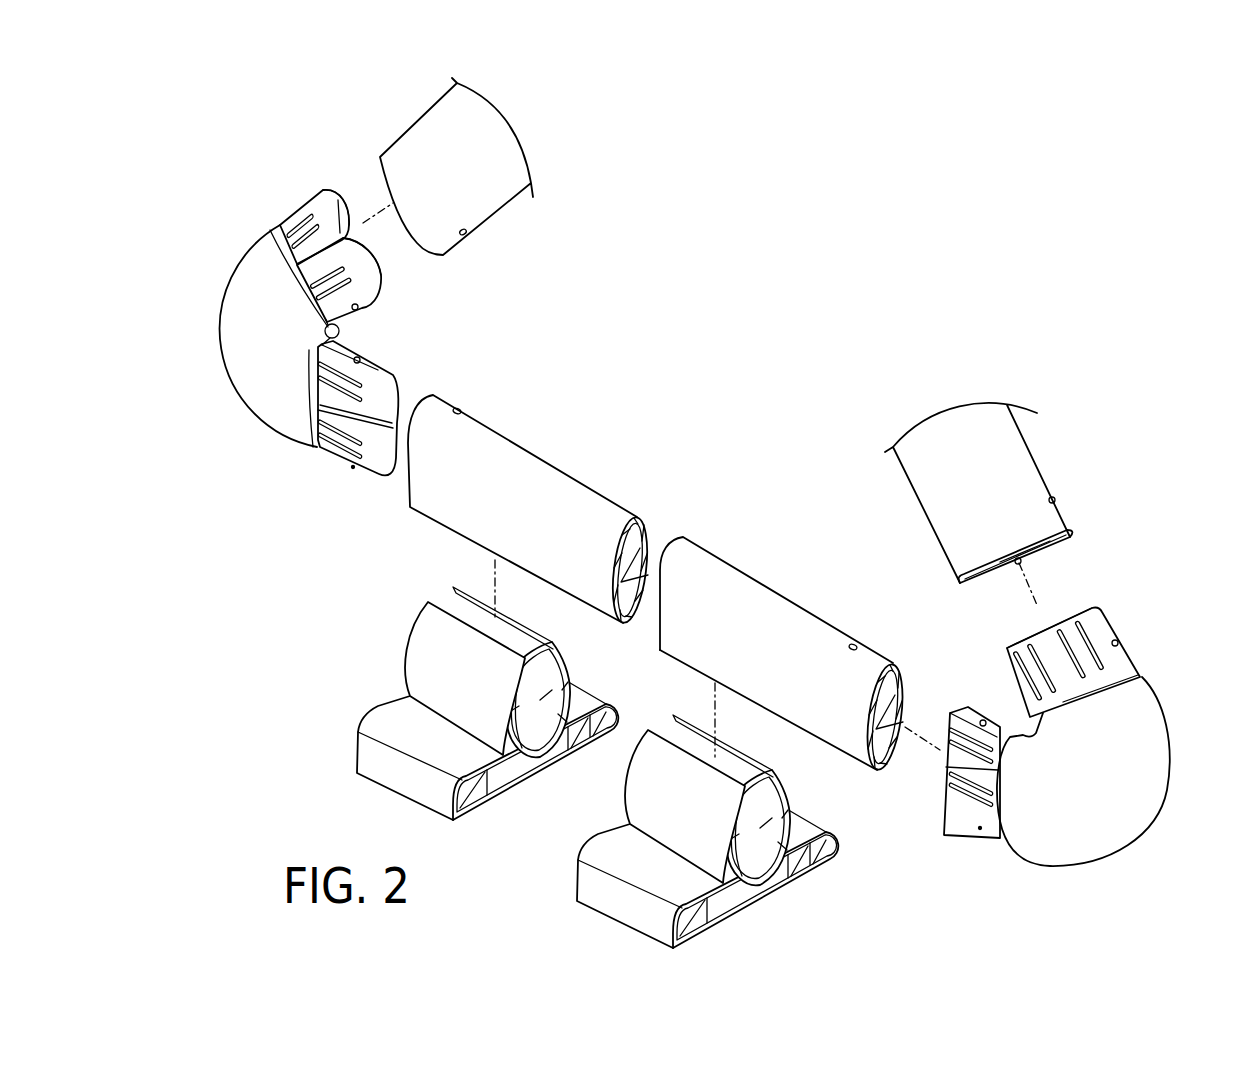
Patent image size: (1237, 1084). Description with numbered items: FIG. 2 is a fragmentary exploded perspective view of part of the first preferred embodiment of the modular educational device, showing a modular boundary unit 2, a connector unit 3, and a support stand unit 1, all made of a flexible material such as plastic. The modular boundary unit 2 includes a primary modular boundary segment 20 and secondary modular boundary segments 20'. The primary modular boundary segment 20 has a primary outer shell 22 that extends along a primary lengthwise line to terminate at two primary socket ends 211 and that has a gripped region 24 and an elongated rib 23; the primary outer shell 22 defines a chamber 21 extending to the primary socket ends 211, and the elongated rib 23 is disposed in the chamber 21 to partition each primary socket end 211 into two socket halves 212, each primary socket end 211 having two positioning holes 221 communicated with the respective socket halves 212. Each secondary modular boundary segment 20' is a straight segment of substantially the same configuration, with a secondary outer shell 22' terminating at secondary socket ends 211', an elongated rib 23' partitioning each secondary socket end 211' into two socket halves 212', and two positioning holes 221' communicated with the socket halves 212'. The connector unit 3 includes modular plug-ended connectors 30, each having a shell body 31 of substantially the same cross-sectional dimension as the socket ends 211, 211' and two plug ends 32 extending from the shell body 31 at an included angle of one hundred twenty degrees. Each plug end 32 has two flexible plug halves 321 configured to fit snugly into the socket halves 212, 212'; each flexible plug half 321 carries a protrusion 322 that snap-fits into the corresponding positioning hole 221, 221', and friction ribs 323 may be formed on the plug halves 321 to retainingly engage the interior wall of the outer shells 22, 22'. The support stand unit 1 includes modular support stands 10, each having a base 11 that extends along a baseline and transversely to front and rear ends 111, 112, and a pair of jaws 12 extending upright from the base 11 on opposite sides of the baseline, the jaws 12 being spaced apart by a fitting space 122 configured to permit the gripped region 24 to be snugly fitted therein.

The support stand unit 1 is at (632, 769).
The modular support stand 10 is at (610, 815).
The base 11 is at (660, 880).
The front end 111 is at (640, 912).
The rear end 112 is at (802, 806).
The jaws 12 is at (656, 745).
The fitting space 122 is at (757, 857).
The modular boundary unit 2 is at (759, 456).
The primary modular boundary segment 20 is at (658, 602).
The secondary modular boundary segment 20' is at (761, 356).
The chamber 21 is at (635, 532).
The primary outer shell 22 is at (570, 510).
The secondary outer shell 22' is at (725, 330).
The positioning holes 221 is at (667, 510).
The positioning holes 221' is at (807, 365).
The primary socket ends 211 is at (643, 658).
The secondary socket ends 211' is at (745, 432).
The socket halves 212 is at (904, 706).
The socket halves 212' is at (1000, 596).
The elongated rib 23 is at (915, 704).
The elongated rib 23' is at (1070, 533).
The gripped region 24 is at (783, 710).
The connector unit 3 is at (700, 520).
The modular plug-ended connector 30 is at (695, 520).
The shell body 31 is at (253, 343).
The plug ends 32 is at (739, 520).
The flexible plug halves 321 is at (370, 223).
The protrusion 322 is at (293, 208).
The friction ribs 323 is at (1100, 665).